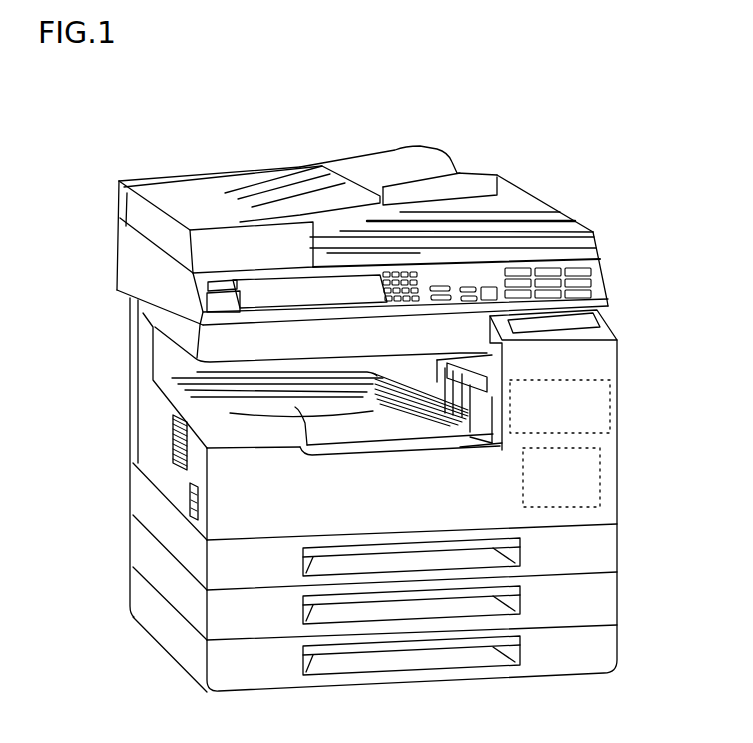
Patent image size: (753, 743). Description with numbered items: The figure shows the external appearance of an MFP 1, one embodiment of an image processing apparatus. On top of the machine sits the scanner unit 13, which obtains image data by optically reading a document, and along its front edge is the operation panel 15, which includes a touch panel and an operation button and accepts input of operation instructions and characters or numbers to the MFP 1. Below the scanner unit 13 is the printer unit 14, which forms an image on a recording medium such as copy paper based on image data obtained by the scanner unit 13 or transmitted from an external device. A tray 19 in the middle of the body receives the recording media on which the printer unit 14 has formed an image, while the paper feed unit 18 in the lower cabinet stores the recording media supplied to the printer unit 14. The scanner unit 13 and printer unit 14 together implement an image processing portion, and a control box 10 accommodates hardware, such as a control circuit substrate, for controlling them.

The MFP 1 is at (97, 89).
The control box 10 is at (600, 485).
The scanner unit 13 is at (220, 220).
The printer unit 14 is at (620, 458).
The operation panel 15 is at (445, 285).
The paper feed unit 18 is at (177, 540).
The tray 19 is at (230, 413).